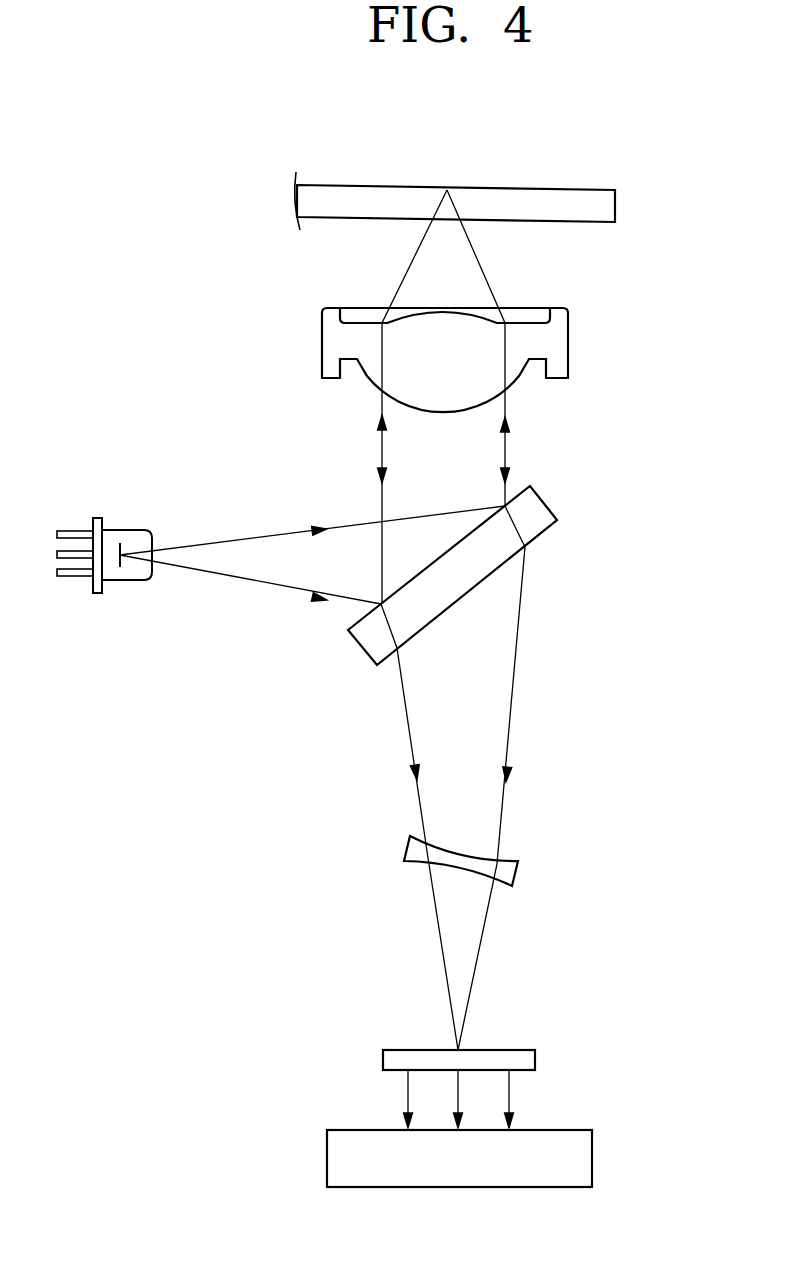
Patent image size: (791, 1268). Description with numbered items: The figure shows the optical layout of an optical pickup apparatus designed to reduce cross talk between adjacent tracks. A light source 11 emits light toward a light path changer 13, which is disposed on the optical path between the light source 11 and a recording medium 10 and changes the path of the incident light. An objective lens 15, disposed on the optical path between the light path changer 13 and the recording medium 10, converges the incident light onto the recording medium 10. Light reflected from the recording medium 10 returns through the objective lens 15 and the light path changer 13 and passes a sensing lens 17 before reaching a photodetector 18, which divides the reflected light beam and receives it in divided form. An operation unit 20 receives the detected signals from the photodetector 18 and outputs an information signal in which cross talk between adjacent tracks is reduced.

The recording medium 10 is at (615, 206).
The light source 11 is at (120, 528).
The light path changer 13 is at (543, 502).
The objective lens 15 is at (568, 338).
The sensing lens 17 is at (518, 873).
The photodetector 18 is at (535, 1060).
The operation unit 20 is at (592, 1157).